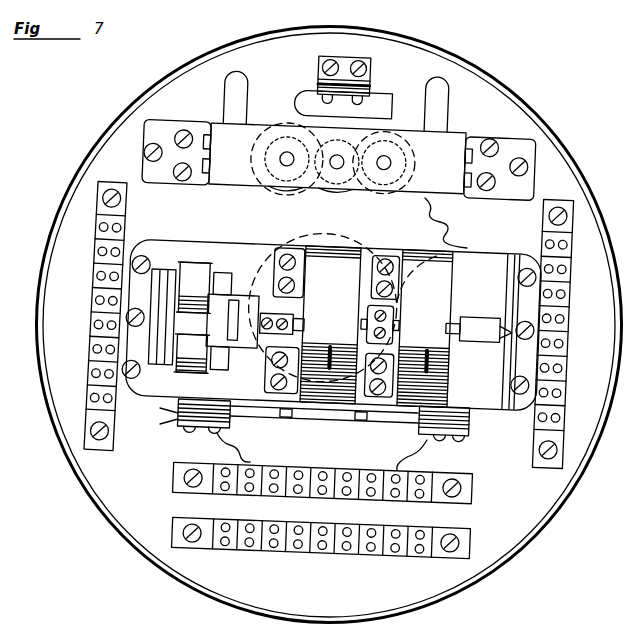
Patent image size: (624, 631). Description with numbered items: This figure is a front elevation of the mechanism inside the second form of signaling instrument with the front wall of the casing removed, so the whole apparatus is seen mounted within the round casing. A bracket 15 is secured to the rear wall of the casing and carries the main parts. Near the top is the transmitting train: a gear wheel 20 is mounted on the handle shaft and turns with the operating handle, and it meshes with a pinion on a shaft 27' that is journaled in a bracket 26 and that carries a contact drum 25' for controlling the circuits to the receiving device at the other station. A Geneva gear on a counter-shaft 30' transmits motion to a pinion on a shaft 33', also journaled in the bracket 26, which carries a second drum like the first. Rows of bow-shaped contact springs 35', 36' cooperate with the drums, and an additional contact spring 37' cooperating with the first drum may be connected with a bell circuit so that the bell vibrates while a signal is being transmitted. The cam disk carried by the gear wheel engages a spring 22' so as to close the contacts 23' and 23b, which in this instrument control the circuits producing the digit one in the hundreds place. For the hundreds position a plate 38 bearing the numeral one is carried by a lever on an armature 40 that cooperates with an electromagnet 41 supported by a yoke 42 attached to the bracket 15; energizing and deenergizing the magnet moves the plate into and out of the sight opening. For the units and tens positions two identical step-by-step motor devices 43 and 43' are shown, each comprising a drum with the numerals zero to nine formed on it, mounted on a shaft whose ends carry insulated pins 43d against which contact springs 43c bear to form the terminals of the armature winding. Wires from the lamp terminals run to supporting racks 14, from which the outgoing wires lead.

The supporting racks 14 is at (470, 528).
The bracket 15 is at (525, 256).
The gear wheel 20 is at (240, 194).
The spring 22' is at (324, 432).
The contact 23' is at (417, 438).
The contact 23b is at (287, 415).
The contact drum 25' is at (388, 149).
The bracket 26 is at (505, 142).
The shaft 27' is at (387, 179).
The counter-shaft 30' is at (333, 178).
The shaft 33' is at (287, 170).
The contact springs 35' is at (451, 103).
The contact springs 36' is at (249, 90).
The contact spring 37' is at (351, 87).
The plate 38 is at (258, 391).
The armature 40 is at (231, 285).
The electromagnet 41 is at (197, 275).
The yoke 42 is at (163, 277).
The motor device 43 is at (442, 309).
The motor device 43' is at (336, 307).
The contact spring 43c is at (485, 330).
The pin 43d is at (463, 317).